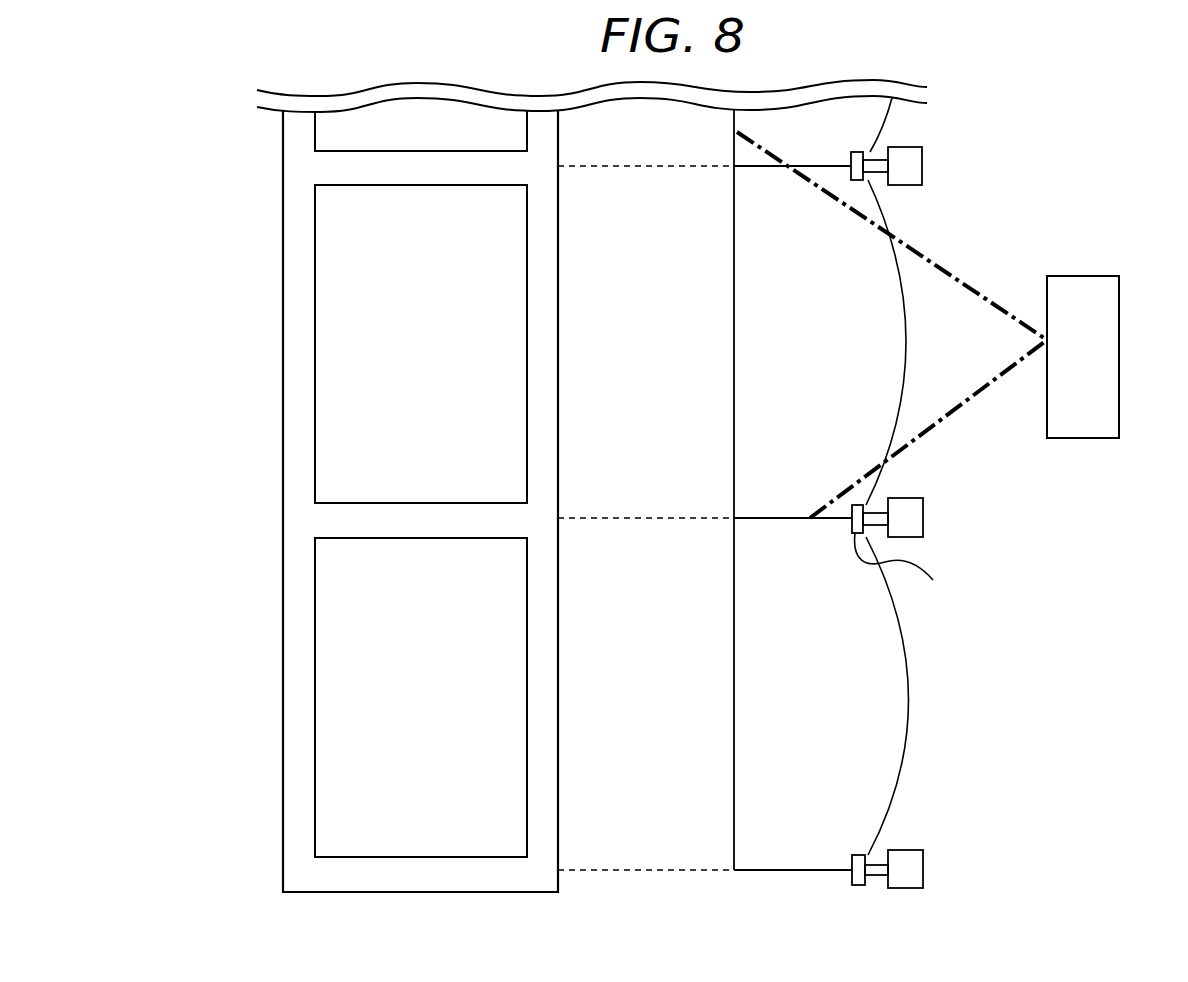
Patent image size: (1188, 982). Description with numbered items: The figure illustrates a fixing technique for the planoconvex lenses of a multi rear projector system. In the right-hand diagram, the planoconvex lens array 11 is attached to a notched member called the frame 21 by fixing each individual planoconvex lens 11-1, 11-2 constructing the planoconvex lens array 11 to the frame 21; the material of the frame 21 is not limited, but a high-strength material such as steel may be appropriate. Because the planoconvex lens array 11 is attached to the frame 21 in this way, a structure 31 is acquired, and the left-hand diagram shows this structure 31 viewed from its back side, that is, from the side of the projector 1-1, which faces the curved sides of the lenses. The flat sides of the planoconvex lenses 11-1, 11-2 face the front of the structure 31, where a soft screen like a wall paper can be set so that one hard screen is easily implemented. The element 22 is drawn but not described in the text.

The projector 1-1 is at (1121, 356).
The planoconvex lens array 11 is at (629, 493).
The planoconvex lens 11-1 is at (340, 332).
The planoconvex lens 11-2 is at (342, 707).
The frame 21 is at (303, 520).
The cable 22 is at (907, 567).
The structure 31 is at (245, 851).